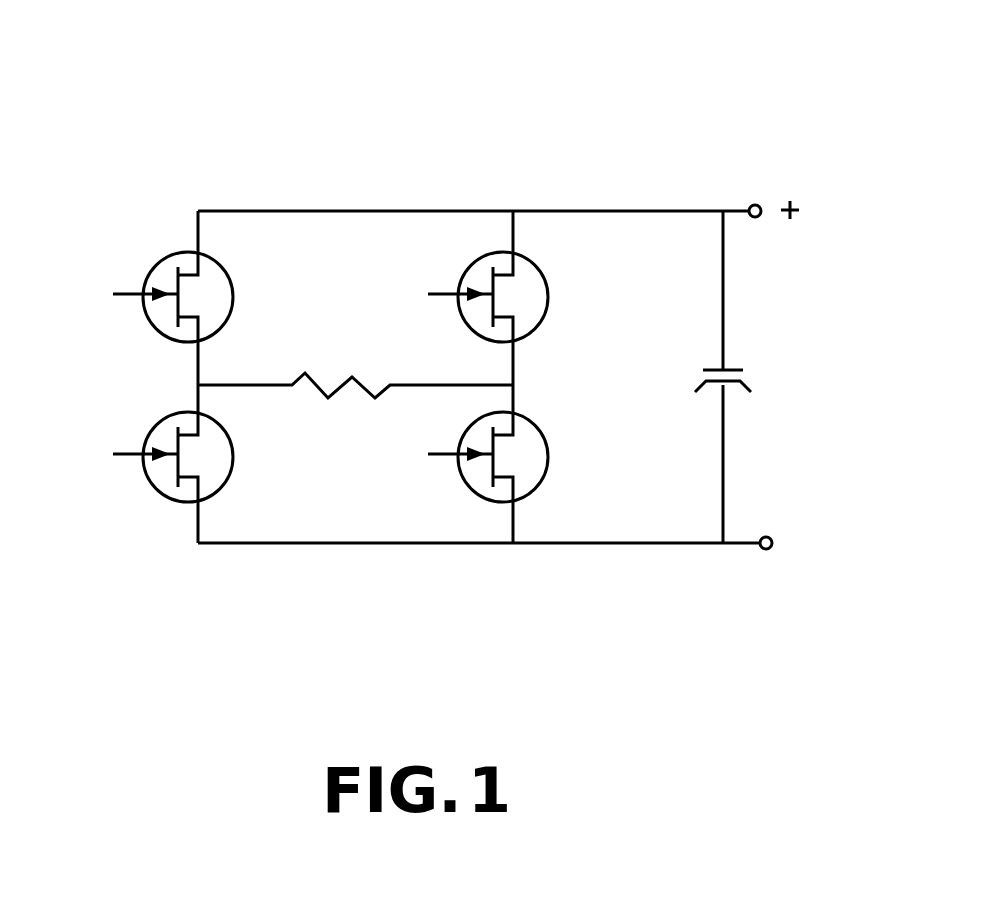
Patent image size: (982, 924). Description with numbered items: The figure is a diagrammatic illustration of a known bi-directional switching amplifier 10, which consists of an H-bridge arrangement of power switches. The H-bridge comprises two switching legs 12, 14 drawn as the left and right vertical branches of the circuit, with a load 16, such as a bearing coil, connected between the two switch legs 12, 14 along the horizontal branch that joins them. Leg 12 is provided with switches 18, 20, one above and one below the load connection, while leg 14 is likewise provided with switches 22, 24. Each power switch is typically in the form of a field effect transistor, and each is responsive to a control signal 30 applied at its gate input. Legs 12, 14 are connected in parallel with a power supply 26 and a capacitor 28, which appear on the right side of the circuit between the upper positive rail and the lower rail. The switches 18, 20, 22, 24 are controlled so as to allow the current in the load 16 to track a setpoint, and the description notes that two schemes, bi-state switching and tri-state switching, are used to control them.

The bi-directional switching amplifier 10 is at (592, 92).
The switching leg 12 is at (198, 360).
The switching leg 14 is at (513, 355).
The load 16 is at (312, 388).
The switch 18 is at (228, 273).
The switch 20 is at (228, 480).
The switch 22 is at (545, 278).
The switch 24 is at (545, 485).
The power supply 26 is at (832, 357).
The capacitor 28 is at (735, 388).
The control signal 30 is at (122, 293).